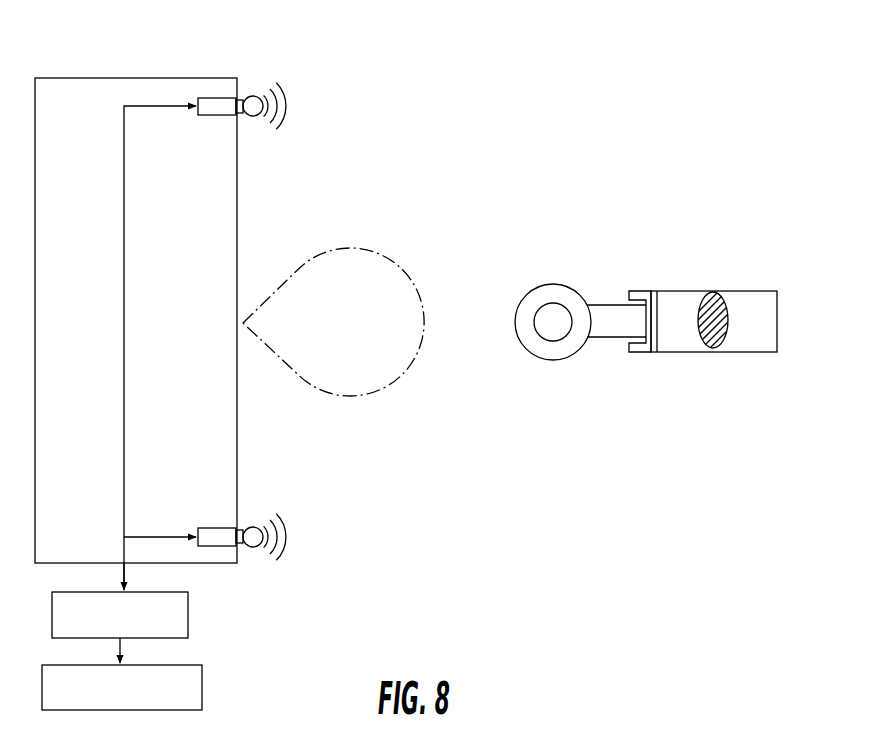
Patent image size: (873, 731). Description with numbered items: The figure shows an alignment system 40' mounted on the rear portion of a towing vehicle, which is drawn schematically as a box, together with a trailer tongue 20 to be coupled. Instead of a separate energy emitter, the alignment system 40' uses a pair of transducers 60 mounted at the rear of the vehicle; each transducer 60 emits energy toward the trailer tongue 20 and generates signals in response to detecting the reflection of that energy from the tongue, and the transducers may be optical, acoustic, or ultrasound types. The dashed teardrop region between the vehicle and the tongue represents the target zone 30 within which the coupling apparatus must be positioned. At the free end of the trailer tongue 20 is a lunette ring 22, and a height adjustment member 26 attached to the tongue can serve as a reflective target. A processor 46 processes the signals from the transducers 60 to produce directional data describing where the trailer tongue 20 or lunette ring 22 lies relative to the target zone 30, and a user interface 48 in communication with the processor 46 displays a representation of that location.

The trailer tongue 20 is at (766, 290).
The lunette ring 22 is at (553, 284).
The height adjustment member 26 is at (645, 290).
The target zone 30 is at (384, 251).
The alignment system 40' is at (460, 73).
The processor 46 is at (188, 613).
The user interface 48 is at (202, 686).
The transducer 60 is at (251, 95).